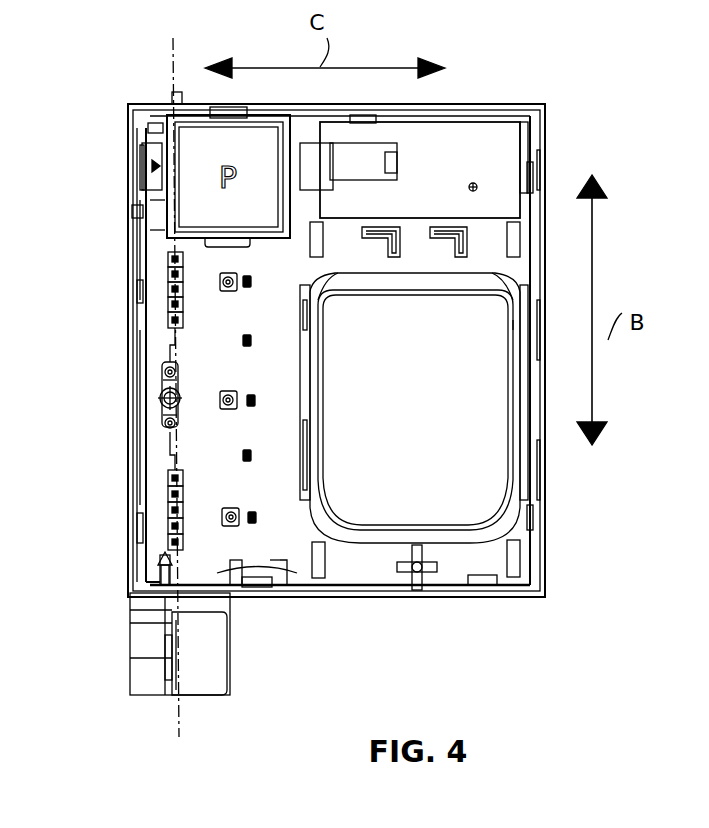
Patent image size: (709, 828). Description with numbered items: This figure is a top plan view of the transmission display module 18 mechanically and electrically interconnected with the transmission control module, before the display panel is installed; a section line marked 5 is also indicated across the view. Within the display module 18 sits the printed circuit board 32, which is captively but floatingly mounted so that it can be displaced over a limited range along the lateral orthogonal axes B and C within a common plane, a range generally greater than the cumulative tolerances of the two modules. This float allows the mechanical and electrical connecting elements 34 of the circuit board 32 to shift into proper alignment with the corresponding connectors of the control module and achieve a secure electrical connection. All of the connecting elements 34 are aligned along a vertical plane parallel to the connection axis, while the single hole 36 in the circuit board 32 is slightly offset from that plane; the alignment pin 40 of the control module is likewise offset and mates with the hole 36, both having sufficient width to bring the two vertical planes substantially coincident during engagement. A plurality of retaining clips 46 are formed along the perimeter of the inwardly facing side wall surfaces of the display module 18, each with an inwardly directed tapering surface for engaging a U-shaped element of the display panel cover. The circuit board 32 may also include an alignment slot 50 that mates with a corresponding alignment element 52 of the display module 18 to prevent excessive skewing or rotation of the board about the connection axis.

The section line 5- 5 is at (125, 47).
The transmission display module 18 is at (485, 104).
The printed circuit board 32 is at (287, 647).
The mechanical and electrical connecting elements 34 is at (186, 315).
The hole 36 is at (160, 425).
The alignment pin 40 is at (181, 393).
The retaining clips 46 is at (528, 175).
The alignment slot 50 is at (222, 578).
The alignment element 52 is at (152, 595).